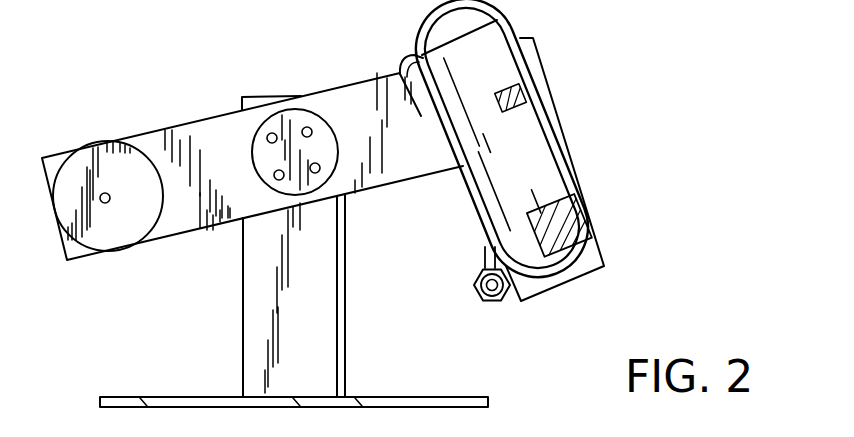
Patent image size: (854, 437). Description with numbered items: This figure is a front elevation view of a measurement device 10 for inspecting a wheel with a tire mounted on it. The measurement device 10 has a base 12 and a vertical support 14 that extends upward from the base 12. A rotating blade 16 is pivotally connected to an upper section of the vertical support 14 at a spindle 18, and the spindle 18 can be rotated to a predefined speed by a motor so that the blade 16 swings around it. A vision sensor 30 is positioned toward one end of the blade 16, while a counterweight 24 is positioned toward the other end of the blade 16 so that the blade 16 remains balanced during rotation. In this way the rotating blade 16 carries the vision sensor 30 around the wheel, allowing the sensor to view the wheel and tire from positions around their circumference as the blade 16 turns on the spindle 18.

The measurement device 10 is at (113, 120).
The base 12 is at (198, 397).
The vertical support 14 is at (317, 275).
The rotating blade 16 is at (212, 132).
The spindle 18 is at (323, 142).
The counterweight 24 is at (110, 233).
The vision sensor 30 is at (528, 145).